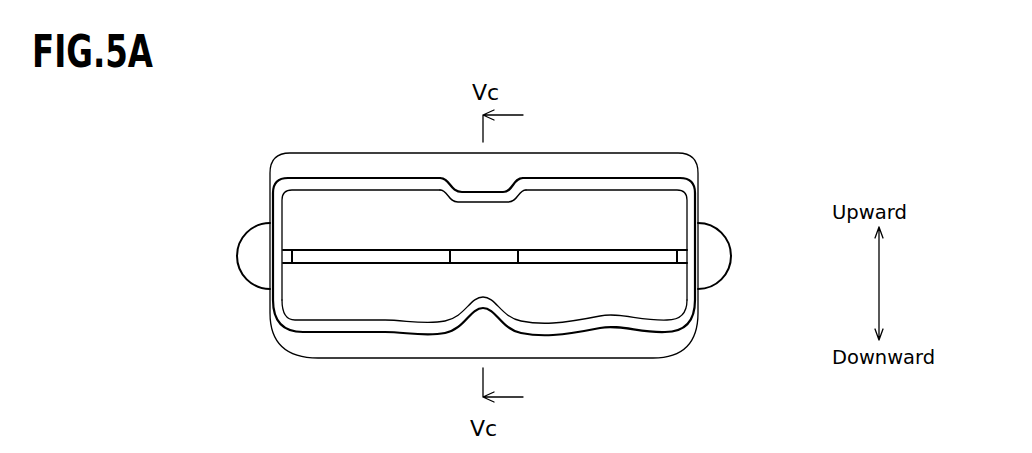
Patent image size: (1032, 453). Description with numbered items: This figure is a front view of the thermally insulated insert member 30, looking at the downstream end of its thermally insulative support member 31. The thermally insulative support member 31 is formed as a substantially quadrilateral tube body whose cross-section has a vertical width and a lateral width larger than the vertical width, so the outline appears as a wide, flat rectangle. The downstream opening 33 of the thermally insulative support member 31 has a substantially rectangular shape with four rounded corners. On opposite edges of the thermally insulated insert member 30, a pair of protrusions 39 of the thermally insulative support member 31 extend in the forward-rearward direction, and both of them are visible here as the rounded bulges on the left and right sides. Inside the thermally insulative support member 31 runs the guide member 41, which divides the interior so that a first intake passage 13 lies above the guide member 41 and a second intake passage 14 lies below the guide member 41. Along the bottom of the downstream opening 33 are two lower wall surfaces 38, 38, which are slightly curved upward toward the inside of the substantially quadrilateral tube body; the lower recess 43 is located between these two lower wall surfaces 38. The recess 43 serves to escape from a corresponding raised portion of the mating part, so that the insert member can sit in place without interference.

The first intake passage 13 is at (430, 232).
The second intake passage 14 is at (430, 304).
The thermally insulated insert member 30 is at (682, 80).
The thermally insulative support member 31 is at (588, 153).
The downstream opening 33 is at (325, 190).
The lower wall surfaces 38 is at (369, 318).
The protrusions 39 is at (237, 256).
The guide member 41 is at (635, 249).
The recess 43 is at (473, 191).